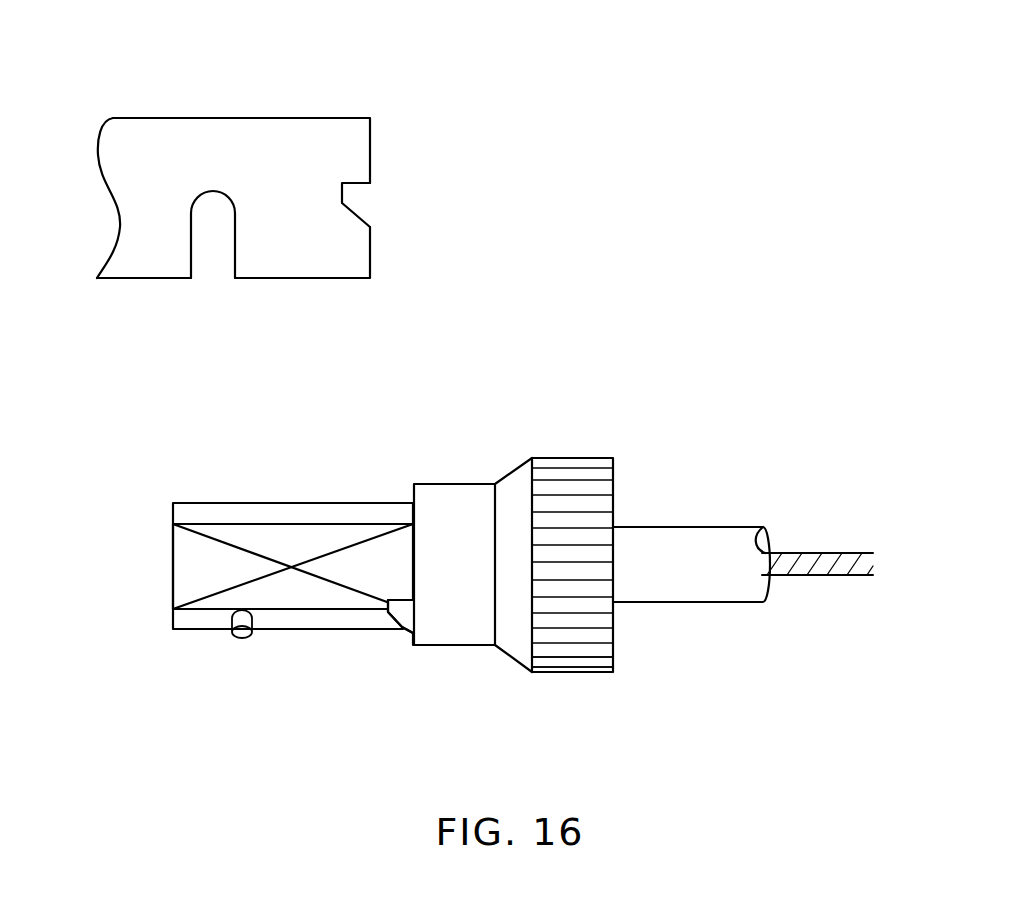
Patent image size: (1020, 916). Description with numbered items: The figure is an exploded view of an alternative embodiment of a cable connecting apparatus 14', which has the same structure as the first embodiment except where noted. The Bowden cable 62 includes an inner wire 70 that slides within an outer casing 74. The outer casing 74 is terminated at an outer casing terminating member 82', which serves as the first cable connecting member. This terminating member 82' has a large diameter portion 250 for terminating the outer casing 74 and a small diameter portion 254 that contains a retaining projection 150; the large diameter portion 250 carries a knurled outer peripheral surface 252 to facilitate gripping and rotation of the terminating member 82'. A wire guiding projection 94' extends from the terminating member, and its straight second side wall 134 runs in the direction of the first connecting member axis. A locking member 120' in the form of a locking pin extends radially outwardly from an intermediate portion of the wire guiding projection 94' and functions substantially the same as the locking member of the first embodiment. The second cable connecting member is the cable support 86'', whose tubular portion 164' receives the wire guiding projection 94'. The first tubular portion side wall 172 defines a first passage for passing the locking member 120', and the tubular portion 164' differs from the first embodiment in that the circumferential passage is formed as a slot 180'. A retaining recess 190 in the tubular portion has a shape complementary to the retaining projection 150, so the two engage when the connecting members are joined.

The tubular portion 164' is at (238, 178).
The first tubular portion side wall 172 is at (157, 130).
The retaining recess 190 is at (370, 200).
The slot 180' is at (201, 266).
The cable support 86'' is at (74, 198).
The cable connecting apparatus 14' is at (481, 423).
The wire guiding projection 94' is at (251, 574).
The second side wall 134 is at (178, 559).
The locking member 120' is at (225, 656).
The retaining projection 150 is at (400, 614).
The outer casing terminating member 82' is at (513, 559).
The small diameter portion 254 is at (445, 500).
The large diameter portion 250 is at (582, 477).
The knurled outer peripheral surface 252 is at (583, 658).
The Bowden cable 62 is at (702, 517).
The outer casing 74 is at (698, 587).
The inner wire 70 is at (830, 568).